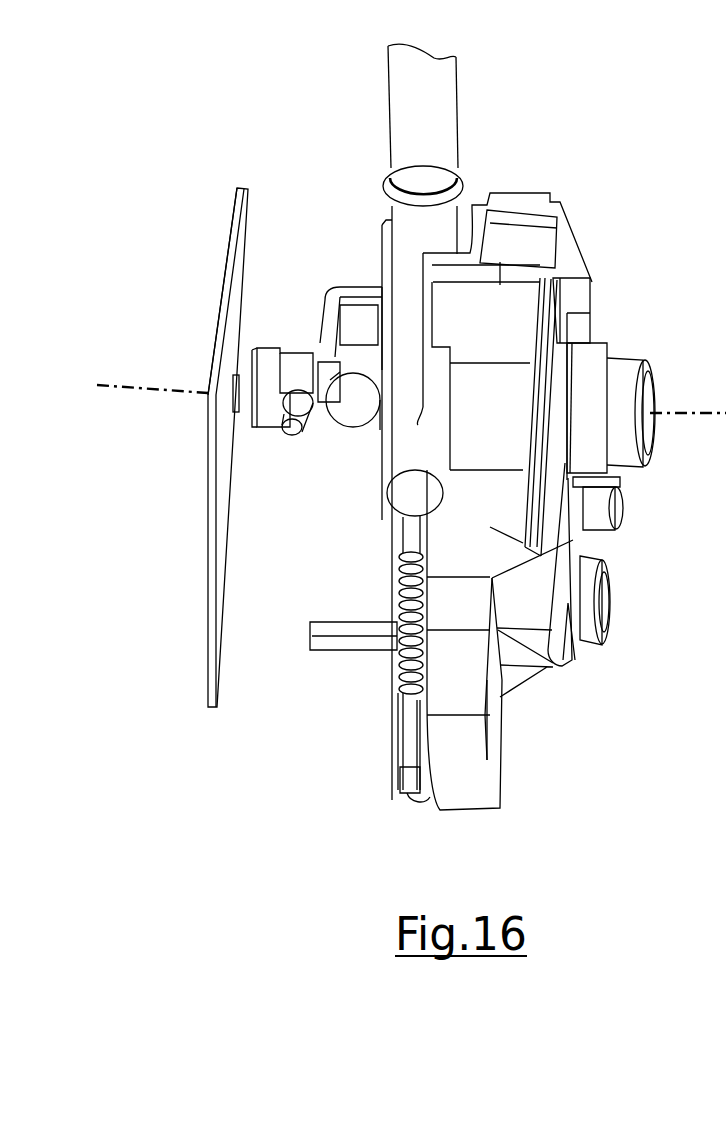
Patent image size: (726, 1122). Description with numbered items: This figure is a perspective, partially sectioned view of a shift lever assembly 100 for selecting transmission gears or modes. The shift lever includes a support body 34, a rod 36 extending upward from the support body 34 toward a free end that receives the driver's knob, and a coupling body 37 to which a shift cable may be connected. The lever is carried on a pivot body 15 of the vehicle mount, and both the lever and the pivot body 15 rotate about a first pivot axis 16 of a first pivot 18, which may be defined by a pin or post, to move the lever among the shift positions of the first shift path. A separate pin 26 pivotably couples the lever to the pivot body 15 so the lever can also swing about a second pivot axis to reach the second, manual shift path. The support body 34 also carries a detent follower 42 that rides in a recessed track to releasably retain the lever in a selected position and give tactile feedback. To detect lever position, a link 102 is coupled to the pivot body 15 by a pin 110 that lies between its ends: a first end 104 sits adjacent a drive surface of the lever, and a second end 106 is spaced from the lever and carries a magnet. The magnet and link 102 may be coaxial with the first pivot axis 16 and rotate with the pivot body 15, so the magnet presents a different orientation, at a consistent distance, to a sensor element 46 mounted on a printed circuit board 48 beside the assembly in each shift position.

The shift lever assembly 100 is at (534, 110).
The rod 36 is at (457, 90).
The support body 34 is at (468, 203).
The coupling body 37 is at (580, 276).
The first pivot 18 is at (623, 363).
The first pivot axis 16 is at (702, 412).
The pivot body 15 is at (352, 285).
The printed circuit board 48 is at (230, 250).
The sensor element 46 is at (237, 374).
The second end 106 is at (263, 378).
The first end 104 is at (356, 407).
The pin 110 is at (288, 437).
The link 102 is at (323, 385).
The pin 26 is at (395, 478).
The detent follower 42 is at (402, 775).